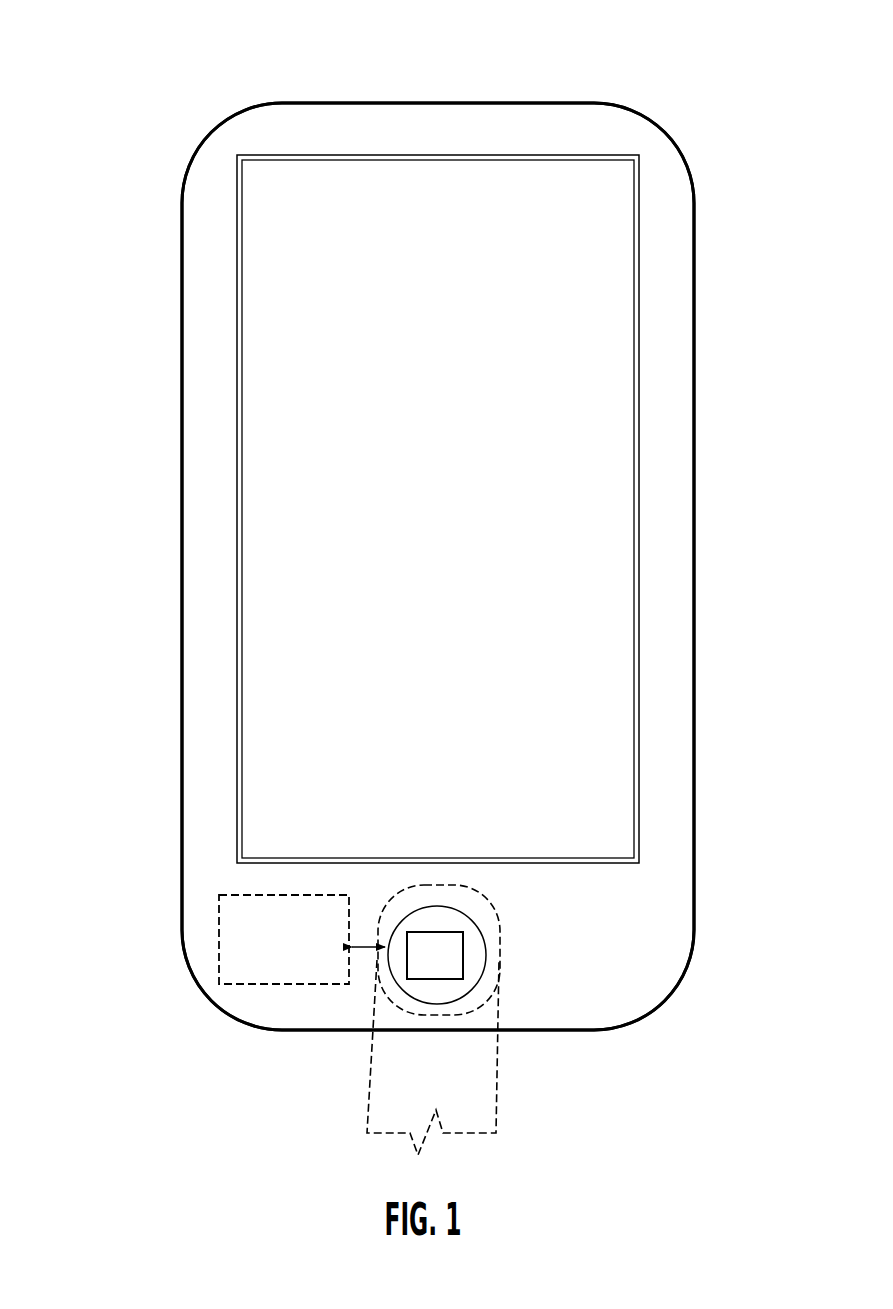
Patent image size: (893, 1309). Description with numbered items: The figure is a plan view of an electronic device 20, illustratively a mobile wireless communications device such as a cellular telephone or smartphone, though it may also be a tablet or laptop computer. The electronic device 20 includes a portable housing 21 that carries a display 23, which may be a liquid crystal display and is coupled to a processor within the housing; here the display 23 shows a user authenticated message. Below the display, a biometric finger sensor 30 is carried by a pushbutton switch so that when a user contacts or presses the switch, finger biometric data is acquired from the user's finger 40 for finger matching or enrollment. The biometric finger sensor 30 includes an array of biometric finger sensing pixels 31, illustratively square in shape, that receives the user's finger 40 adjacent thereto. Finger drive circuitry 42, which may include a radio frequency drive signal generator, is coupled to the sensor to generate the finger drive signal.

The electronic device 20 is at (112, 100).
The portable housing 21 is at (182, 370).
The display 23 is at (257, 318).
The biometric finger sensor 30 is at (474, 918).
The array of biometric finger sensing pixels 31 is at (463, 977).
The user's finger 40 is at (367, 1067).
The finger drive circuitry 42 is at (218, 900).